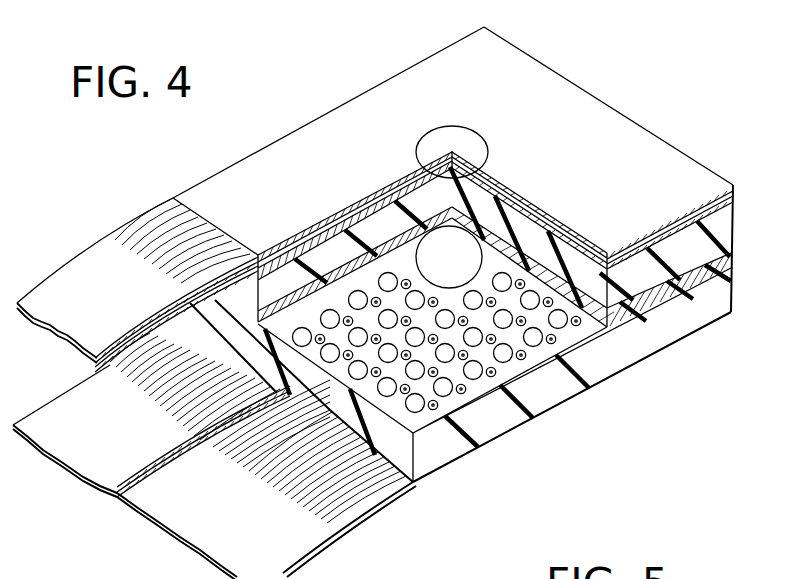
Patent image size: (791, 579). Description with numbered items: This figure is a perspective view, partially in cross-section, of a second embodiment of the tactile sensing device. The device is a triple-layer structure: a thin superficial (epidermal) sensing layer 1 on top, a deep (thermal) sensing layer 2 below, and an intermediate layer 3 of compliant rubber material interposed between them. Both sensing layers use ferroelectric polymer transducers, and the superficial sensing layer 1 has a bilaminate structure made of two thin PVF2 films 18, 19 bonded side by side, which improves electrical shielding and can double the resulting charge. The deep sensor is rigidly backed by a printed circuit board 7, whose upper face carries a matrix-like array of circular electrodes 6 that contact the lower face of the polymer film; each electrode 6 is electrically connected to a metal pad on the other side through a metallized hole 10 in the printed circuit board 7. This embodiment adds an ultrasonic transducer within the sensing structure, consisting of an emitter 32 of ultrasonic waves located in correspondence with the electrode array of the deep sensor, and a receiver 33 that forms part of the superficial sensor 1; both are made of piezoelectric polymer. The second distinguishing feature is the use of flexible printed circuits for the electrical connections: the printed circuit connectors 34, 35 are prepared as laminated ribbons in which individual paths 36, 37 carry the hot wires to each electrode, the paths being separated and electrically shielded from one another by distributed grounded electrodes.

The superficial sensing layer 1 is at (622, 160).
The deep sensing layer 2 is at (722, 290).
The intermediate layer 3 is at (328, 262).
The electrodes 6 is at (563, 328).
The printed circuit board 7 is at (602, 355).
The metallized hole 10 is at (492, 374).
The PVF2 film 18 is at (700, 207).
The PVF2 film 19 is at (719, 217).
The emitter of ultrasonic waves 32 is at (503, 183).
The receiver 33 is at (457, 143).
The printed circuit connector 34 is at (187, 517).
The printed circuit connector 35 is at (70, 282).
The path 36 is at (157, 467).
The path 37 is at (140, 313).